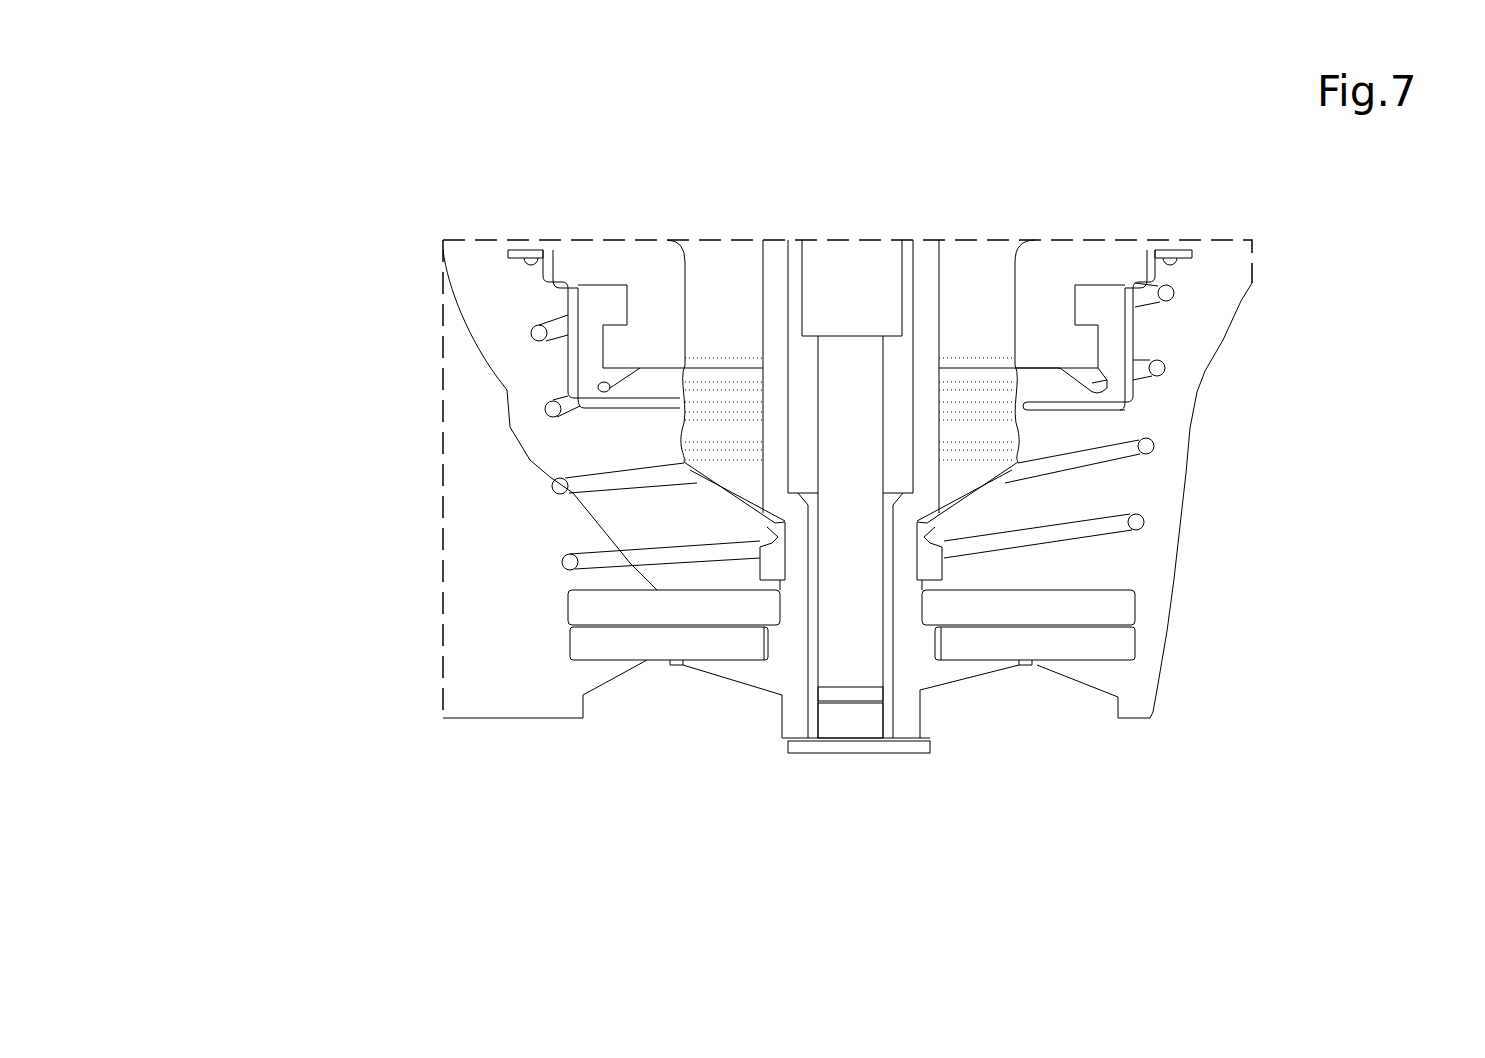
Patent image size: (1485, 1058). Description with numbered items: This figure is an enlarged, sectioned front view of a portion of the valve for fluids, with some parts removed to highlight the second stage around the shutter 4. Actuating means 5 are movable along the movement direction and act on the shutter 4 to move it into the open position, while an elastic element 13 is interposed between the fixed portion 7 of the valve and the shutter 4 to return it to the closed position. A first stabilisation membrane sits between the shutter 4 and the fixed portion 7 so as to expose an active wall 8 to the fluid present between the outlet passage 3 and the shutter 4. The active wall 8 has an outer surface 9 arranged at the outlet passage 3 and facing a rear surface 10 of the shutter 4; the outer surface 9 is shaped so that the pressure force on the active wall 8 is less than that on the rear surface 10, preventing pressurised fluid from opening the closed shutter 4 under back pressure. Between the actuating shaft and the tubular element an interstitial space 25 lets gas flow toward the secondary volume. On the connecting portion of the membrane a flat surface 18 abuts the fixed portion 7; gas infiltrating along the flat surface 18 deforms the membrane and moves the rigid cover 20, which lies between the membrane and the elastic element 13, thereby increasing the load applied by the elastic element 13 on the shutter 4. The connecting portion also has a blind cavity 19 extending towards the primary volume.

The outlet passage 3 is at (385, 522).
The shutter 4 is at (557, 632).
The actuating means 5 is at (858, 664).
The fixed portion 7 is at (658, 393).
The active wall 8 is at (1007, 470).
The outer surface 9 is at (980, 503).
The rear surface 10 is at (606, 574).
The elastic element 13 is at (548, 408).
The flat surface 18 is at (1073, 403).
The blind cavity 19 is at (610, 382).
The rigid cover 20 is at (591, 420).
The interstitial space 25 is at (899, 623).